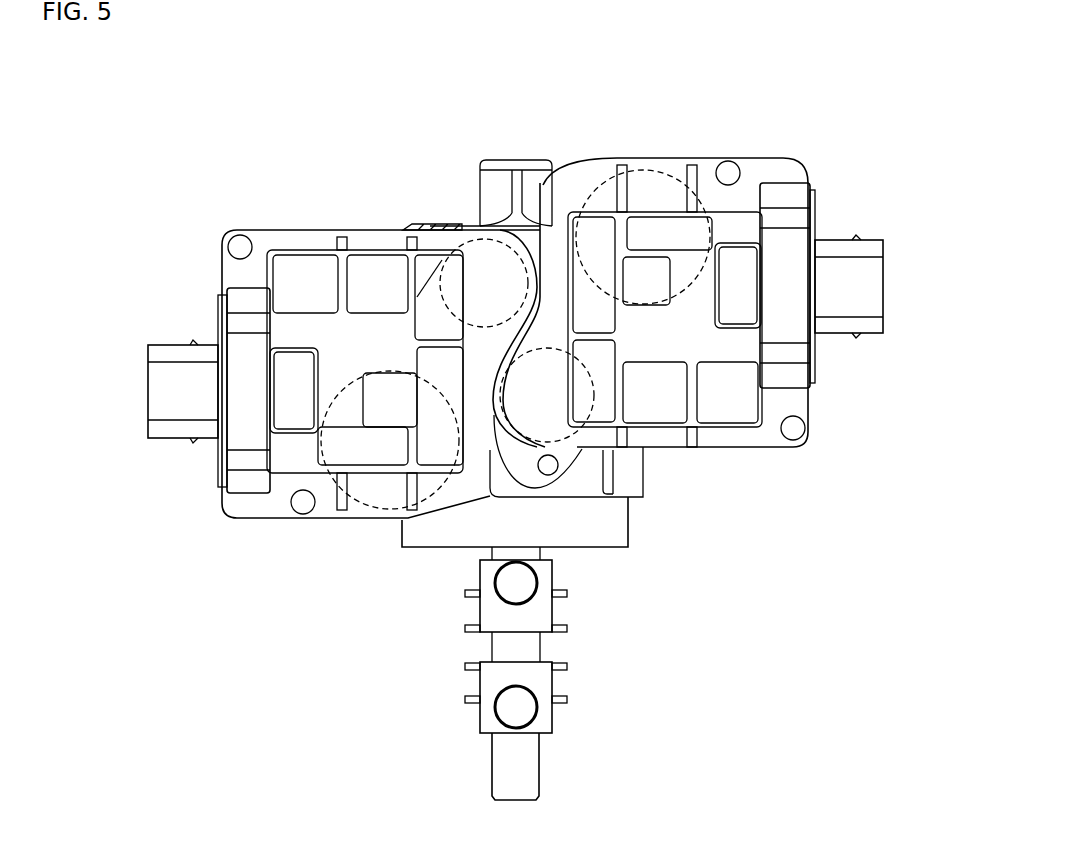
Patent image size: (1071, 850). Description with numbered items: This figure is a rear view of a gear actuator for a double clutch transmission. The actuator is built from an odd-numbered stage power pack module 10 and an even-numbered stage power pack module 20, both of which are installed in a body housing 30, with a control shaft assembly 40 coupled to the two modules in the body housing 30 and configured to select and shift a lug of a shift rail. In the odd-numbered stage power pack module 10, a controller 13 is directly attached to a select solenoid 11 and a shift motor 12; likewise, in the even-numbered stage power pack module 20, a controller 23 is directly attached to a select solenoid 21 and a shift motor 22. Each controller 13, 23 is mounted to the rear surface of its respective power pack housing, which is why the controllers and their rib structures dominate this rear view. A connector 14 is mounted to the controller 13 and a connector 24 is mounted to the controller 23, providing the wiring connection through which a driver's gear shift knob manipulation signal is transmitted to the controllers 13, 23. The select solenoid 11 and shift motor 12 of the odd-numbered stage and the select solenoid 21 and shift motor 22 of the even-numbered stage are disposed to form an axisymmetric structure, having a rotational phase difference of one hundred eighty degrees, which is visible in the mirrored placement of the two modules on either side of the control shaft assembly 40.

The odd-numbered stage power pack module 10 is at (726, 288).
The select solenoid 11 is at (590, 373).
The shift motor 12 is at (650, 166).
The controller 13 is at (770, 440).
The connector 14 is at (865, 287).
The even-numbered stage power pack module 20 is at (341, 347).
The select solenoid 21 is at (467, 227).
The shift motor 22 is at (345, 498).
The controller 23 is at (303, 268).
The connector 24 is at (165, 352).
The body housing 30 is at (617, 525).
The control shaft assembly 40 is at (565, 690).